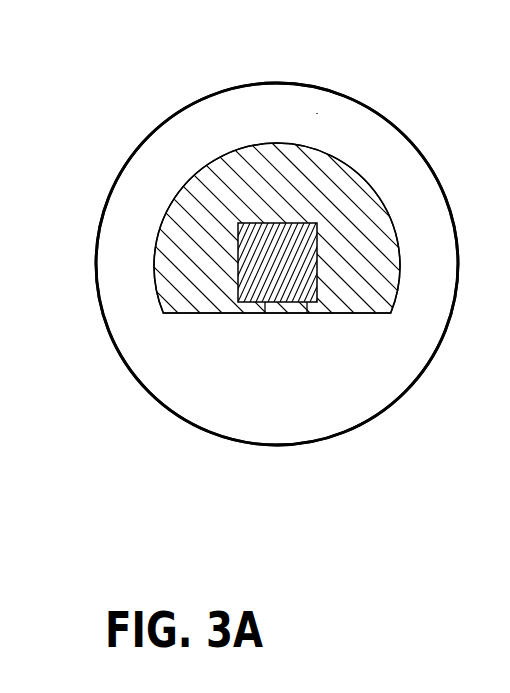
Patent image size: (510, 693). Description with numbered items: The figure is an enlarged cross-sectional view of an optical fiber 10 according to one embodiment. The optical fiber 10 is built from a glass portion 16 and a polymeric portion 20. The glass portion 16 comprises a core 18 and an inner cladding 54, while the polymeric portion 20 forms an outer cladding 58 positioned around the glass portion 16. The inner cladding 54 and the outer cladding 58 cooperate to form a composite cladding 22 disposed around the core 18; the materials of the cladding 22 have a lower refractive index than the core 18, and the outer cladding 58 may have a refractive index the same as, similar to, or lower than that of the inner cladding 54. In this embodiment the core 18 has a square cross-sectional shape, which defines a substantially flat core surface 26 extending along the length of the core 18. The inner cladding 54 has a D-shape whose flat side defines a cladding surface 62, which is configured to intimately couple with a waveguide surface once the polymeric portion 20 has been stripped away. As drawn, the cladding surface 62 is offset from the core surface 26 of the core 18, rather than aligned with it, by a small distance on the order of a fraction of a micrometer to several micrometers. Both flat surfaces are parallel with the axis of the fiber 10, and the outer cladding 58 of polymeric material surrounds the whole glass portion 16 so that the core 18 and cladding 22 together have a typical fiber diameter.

The optical fiber 10 is at (145, 98).
The glass portion 16 is at (200, 315).
The core 18 is at (302, 238).
The polymeric portion 20 is at (127, 237).
The cladding 22 is at (242, 78).
The core surface 26 is at (265, 313).
The inner cladding 54 is at (333, 173).
The outer cladding 58 is at (317, 113).
The cladding surface 62 is at (307, 313).